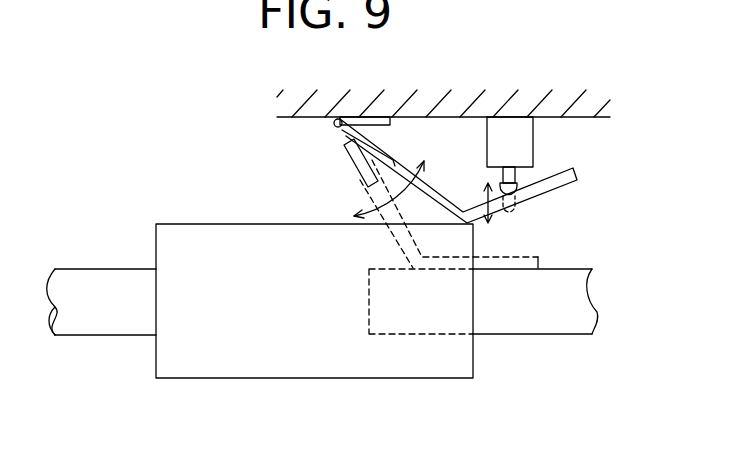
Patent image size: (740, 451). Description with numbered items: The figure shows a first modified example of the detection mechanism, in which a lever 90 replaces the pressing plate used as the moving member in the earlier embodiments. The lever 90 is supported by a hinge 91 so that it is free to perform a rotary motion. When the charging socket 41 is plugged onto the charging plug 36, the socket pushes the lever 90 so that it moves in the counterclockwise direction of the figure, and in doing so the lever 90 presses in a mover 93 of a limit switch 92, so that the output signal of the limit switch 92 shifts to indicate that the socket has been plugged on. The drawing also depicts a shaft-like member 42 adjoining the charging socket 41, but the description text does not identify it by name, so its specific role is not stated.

The charging plug 36 is at (526, 334).
The charging socket 41 is at (228, 223).
The input shaft 42 is at (107, 268).
The lever 90 is at (475, 225).
The hinge 91 is at (372, 117).
The limit switch 92 is at (533, 138).
The mover 93 is at (518, 210).